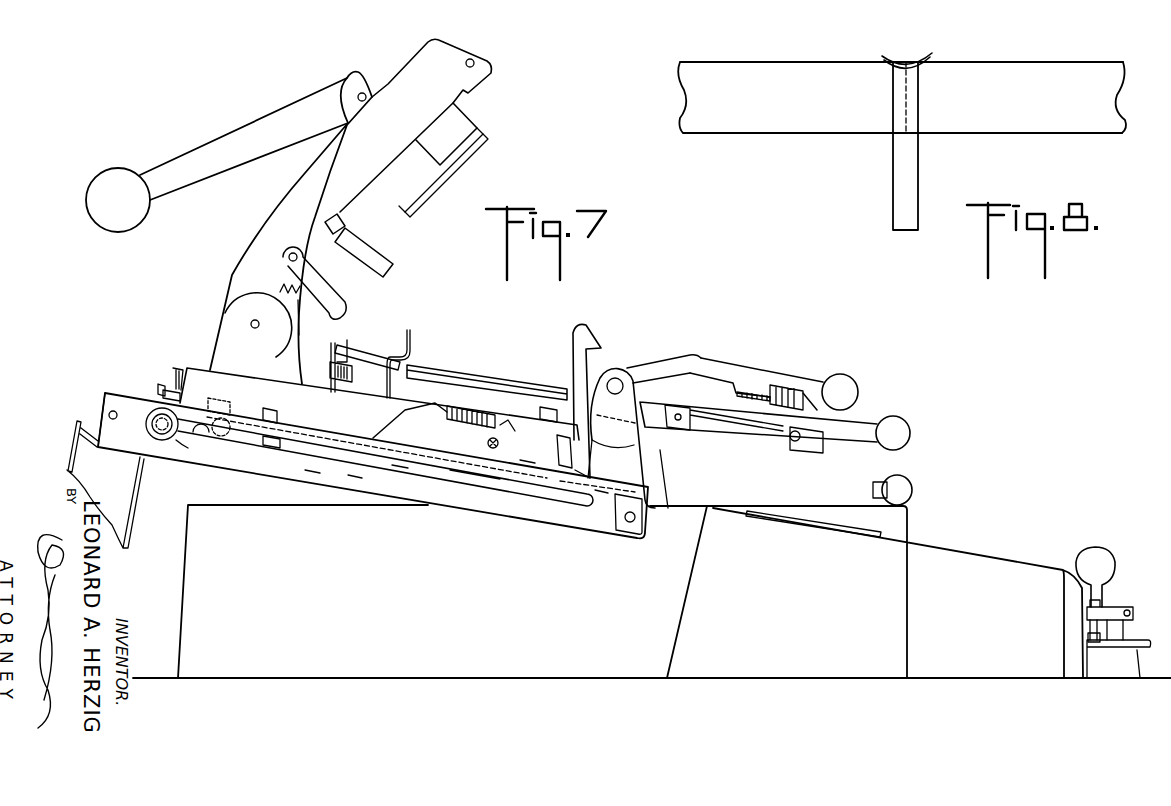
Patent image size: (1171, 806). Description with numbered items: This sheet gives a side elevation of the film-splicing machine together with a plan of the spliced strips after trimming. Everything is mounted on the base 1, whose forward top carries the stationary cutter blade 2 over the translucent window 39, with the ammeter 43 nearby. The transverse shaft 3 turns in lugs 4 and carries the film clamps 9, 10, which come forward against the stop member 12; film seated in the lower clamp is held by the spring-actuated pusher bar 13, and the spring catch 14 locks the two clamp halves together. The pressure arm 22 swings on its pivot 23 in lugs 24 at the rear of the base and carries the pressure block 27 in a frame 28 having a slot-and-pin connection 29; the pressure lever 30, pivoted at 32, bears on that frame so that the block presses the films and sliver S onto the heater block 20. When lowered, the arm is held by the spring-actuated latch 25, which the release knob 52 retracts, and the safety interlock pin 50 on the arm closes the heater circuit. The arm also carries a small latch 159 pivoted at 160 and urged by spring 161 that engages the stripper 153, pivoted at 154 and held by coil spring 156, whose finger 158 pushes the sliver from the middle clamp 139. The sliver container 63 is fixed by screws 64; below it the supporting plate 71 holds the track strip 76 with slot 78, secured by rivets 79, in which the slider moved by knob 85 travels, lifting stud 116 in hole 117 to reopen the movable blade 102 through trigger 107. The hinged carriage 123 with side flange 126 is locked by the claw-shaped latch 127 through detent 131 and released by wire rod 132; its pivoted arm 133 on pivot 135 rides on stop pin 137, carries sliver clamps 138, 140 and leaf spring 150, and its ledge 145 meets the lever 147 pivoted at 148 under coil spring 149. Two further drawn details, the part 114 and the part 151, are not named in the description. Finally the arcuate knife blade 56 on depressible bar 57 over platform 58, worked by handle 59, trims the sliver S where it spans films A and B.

In FIG. 7, the base 1 is at (560, 663).
In FIG. 7, the stationary cutter blade 2 is at (723, 427).
In FIG. 7, the transverse shaft 3 is at (614, 378).
In FIG. 7, the lugs 4 is at (626, 428).
In FIG. 7, the film clamp member 9 is at (713, 368).
In FIG. 7, the film clamp member 10 is at (688, 388).
In FIG. 7, the stop member 12 is at (813, 444).
In FIG. 7, the spring-actuated pusher bar 13 is at (778, 387).
In FIG. 7, the spring catch 14 is at (840, 417).
In FIG. 7, the heater block 20 is at (468, 372).
In FIG. 7, the pressure arm 22 is at (295, 193).
In FIG. 7, the pivot 23 is at (251, 323).
In FIG. 7, the lugs 24 is at (478, 58).
In FIG. 7, the spring-actuated latch 25 is at (582, 332).
In FIG. 7, the pressure block 27 is at (468, 157).
In FIG. 7, the frame 28 is at (458, 126).
In FIG. 7, the slot-and-pin connection 29 is at (424, 183).
In FIG. 7, the pressure lever 30 is at (230, 148).
In FIG. 7, the pivot 32 is at (362, 92).
In FIG. 7, the translucent window 39 is at (753, 428).
In FIG. 7, the ammeter 43 is at (832, 520).
In FIG. 7, the safety interlock pin 50 is at (378, 263).
In FIG. 7, the pressure arm release knob 52 is at (913, 491).
In FIG. 7, the arcuate knife blade 56 is at (1127, 633).
In FIG. 8, the arcuate knife blade 56 is at (884, 57).
In FIG. 7, the depressible bar 57 is at (1120, 607).
In FIG. 7, the platform 58 is at (1143, 656).
In FIG. 7, the handle 59 is at (1100, 552).
In FIG. 7, the dispenser or container 63 is at (70, 446).
In FIG. 7, the screws 64 is at (87, 430).
In FIG. 7, the supporting plate 71 is at (299, 318).
In FIG. 7, the elongated strip of sheet metal 76 is at (560, 515).
In FIG. 7, the longitudinal slot 78 is at (473, 485).
In FIG. 7, the screws or rivets 79 is at (115, 410).
In FIG. 7, the actuating knob 85 is at (162, 441).
In FIG. 7, the movable blade 102 is at (165, 388).
In FIG. 7, the trigger 107 is at (160, 384).
In FIG. 7, the slot 114 is at (600, 495).
In FIG. 7, the stud 116 is at (180, 447).
In FIG. 7, the hole 117 is at (202, 437).
In FIG. 7, the hinged sliver carriage 123 is at (432, 406).
In FIG. 7, the side flange 126 is at (453, 443).
In FIG. 7, the claw-shaped latch 127 is at (545, 407).
In FIG. 7, the detent 131 is at (573, 453).
In FIG. 7, the bent stiff wire rod 132 is at (585, 477).
In FIG. 7, the pivoted arm 133 is at (320, 430).
In FIG. 7, the pivot 135 is at (355, 478).
In FIG. 7, the stop pin 137 is at (227, 436).
In FIG. 7, the sliver clamp 138 is at (215, 412).
In FIG. 7, the sliver clamp 139 is at (400, 468).
In FIG. 7, the sliver clamp 140 is at (527, 448).
In FIG. 7, the ledge 145 is at (312, 470).
In FIG. 7, the lever 147 is at (507, 428).
In FIG. 7, the pivot 148 is at (499, 444).
In FIG. 7, the coil spring 149 is at (468, 416).
In FIG. 7, the leaf spring 150 is at (272, 446).
In FIG. 7, the block 151 is at (265, 416).
In FIG. 7, the stripper 153 is at (362, 345).
In FIG. 7, the pivot 154 is at (333, 370).
In FIG. 7, the coil spring 156 is at (350, 343).
In FIG. 7, the upstanding finger 158 is at (408, 332).
In FIG. 7, the latch 159 is at (313, 268).
In FIG. 7, the pivot 160 is at (287, 256).
In FIG. 7, the spring 161 is at (278, 290).
In FIG. 7, the film A is at (755, 390).
In FIG. 8, the film A is at (767, 72).
In FIG. 8, the film B is at (1073, 120).
In FIG. 8, the sliver S is at (910, 173).